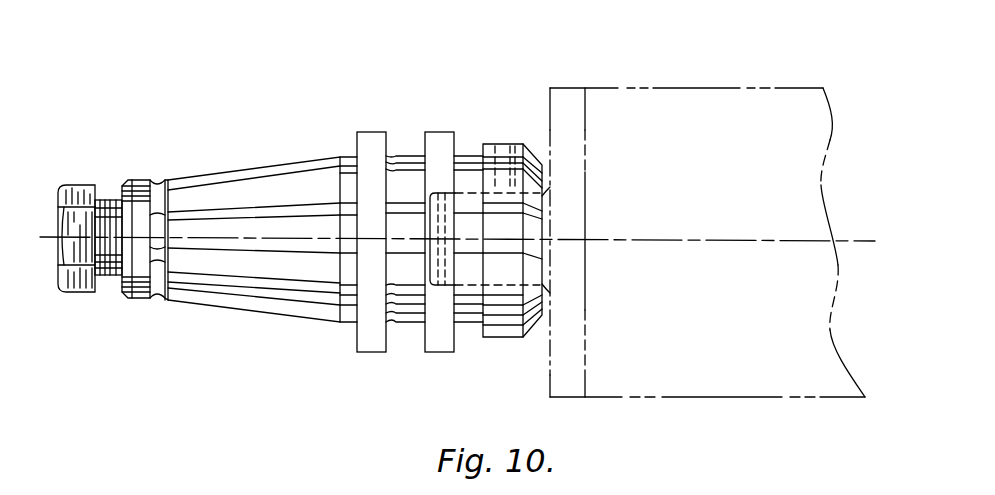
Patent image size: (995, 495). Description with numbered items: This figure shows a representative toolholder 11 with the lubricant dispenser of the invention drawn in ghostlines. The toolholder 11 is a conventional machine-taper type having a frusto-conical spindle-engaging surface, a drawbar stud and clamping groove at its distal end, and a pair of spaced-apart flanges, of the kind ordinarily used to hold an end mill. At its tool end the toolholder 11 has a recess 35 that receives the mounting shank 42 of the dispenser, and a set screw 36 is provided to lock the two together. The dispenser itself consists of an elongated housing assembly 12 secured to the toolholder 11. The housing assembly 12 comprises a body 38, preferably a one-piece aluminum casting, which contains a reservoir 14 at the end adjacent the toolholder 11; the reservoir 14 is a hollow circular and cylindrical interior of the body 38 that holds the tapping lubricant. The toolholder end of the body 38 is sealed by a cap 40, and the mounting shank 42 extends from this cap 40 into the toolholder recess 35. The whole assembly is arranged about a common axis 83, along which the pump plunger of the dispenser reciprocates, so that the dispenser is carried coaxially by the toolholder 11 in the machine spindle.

The toolholder 11 is at (288, 248).
The recess 35 is at (430, 228).
The set screw 36 is at (497, 143).
The mounting shank 42 is at (500, 287).
The axis 83 is at (697, 242).
The cap 40 is at (562, 88).
The elongated housing assembly 12 is at (668, 84).
The body 38 is at (747, 88).
The reservoir 14 is at (787, 157).